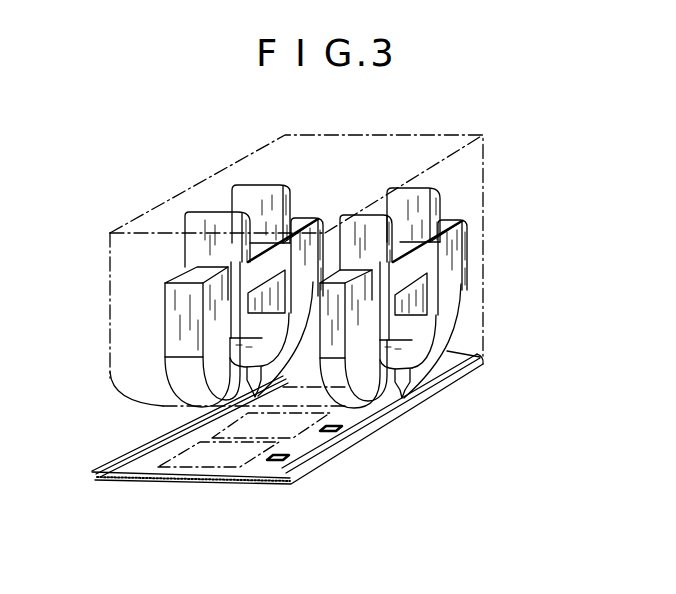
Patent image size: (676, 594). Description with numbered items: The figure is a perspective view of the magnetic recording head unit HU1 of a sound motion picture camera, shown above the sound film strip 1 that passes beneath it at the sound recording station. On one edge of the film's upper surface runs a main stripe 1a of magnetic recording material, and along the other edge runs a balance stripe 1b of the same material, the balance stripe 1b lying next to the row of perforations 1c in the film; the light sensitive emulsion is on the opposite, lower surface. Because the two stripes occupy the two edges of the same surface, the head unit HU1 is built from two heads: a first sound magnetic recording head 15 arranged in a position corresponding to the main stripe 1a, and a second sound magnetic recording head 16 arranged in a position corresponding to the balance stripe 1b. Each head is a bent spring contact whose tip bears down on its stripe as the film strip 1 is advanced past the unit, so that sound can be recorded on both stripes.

The magnetic recording head unit HU1 is at (401, 152).
The film strip 1 is at (168, 470).
The main stripe 1a is at (143, 457).
The balance stripe 1b is at (300, 463).
The contact tab 1c is at (343, 433).
The first sound magnetic recording head 15 is at (244, 194).
The second sound magnetic recording head 16 is at (445, 311).